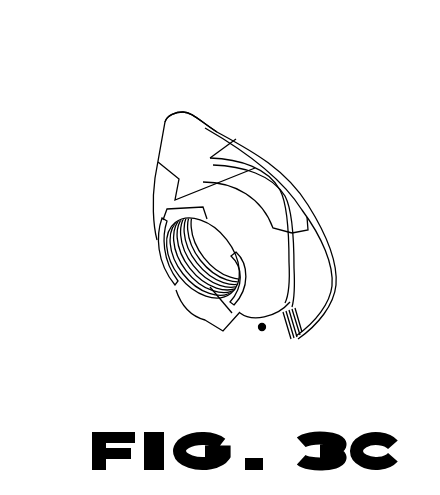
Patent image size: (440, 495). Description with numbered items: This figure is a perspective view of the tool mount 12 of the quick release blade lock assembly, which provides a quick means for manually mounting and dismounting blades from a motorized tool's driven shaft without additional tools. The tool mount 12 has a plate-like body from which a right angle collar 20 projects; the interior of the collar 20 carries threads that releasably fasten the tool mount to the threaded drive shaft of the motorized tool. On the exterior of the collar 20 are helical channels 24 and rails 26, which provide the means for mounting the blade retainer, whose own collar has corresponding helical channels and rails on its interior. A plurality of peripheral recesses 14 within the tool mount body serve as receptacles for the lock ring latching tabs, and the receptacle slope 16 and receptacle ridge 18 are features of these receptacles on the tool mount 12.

The tool mount 12 is at (165, 122).
The tool mount recess 14 is at (273, 177).
The tool mount receptacle slope 16 is at (262, 329).
The tool mount receptacle ridge 18 is at (300, 338).
The tool mount collar 20 is at (210, 235).
The tool mount collar exterior channel 24 is at (255, 247).
The tool mount collar exterior rail 26 is at (222, 200).